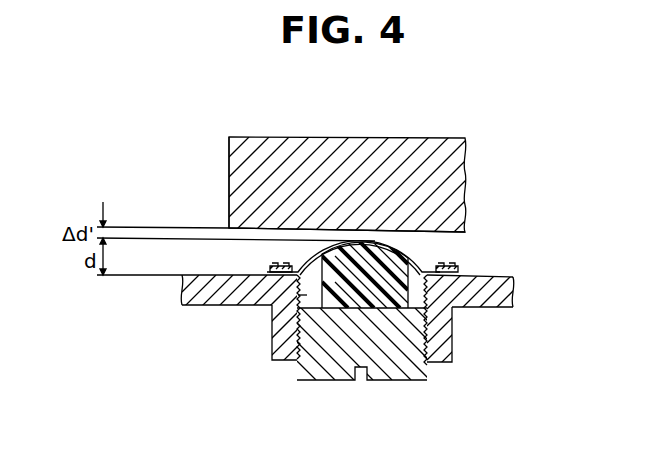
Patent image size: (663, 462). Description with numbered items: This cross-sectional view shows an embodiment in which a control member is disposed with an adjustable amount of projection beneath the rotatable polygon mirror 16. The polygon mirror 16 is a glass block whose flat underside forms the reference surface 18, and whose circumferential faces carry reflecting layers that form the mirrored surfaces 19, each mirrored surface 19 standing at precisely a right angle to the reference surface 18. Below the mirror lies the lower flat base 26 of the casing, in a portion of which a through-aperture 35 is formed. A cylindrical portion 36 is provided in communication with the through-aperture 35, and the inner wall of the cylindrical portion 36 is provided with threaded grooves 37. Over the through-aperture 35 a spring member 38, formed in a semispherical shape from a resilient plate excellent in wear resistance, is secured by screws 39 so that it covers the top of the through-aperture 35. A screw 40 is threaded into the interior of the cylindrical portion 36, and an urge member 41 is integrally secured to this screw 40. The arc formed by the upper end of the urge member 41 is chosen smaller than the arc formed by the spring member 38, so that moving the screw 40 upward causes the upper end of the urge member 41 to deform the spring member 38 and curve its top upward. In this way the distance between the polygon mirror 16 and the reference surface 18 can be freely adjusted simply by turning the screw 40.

The polygon mirror 16 is at (366, 150).
The mirrored surface 19 is at (229, 152).
The reference surface 18 is at (226, 229).
The lower flat base 26 is at (193, 305).
The through-aperture 35 is at (280, 311).
The cylindrical portion 36 is at (446, 340).
The threaded grooves 37 is at (292, 360).
The spring member 38 is at (423, 258).
The screws 39 is at (268, 268).
The screw 40 is at (388, 368).
The urge member 41 is at (387, 260).